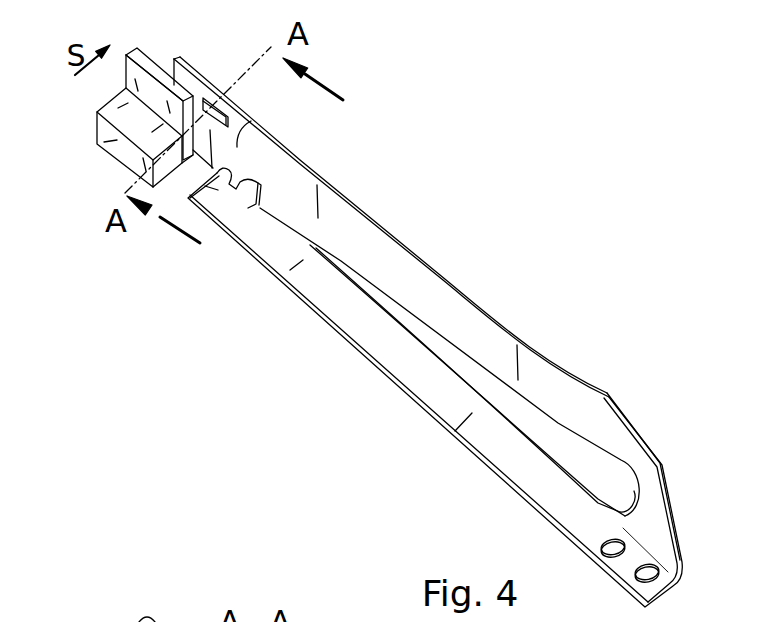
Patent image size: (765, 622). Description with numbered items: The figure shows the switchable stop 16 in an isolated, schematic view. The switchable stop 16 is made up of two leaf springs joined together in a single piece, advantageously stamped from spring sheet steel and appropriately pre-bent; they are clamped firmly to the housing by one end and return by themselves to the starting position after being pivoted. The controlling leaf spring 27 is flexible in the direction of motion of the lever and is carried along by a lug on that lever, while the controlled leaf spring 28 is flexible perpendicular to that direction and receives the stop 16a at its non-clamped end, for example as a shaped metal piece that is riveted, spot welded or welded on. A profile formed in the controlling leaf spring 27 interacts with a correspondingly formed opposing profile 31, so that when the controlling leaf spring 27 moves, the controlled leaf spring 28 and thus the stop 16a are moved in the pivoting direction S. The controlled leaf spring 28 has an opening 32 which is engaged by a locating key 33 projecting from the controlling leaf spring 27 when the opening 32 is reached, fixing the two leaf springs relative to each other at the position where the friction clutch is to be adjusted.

The switchable stop 16 is at (410, 186).
The stop 16a is at (103, 139).
The controlling leaf spring 27 is at (403, 360).
The controlled leaf spring 28 is at (440, 308).
The opposing profile 31 is at (251, 121).
The opening 32 is at (205, 98).
The locating key 33 is at (256, 184).